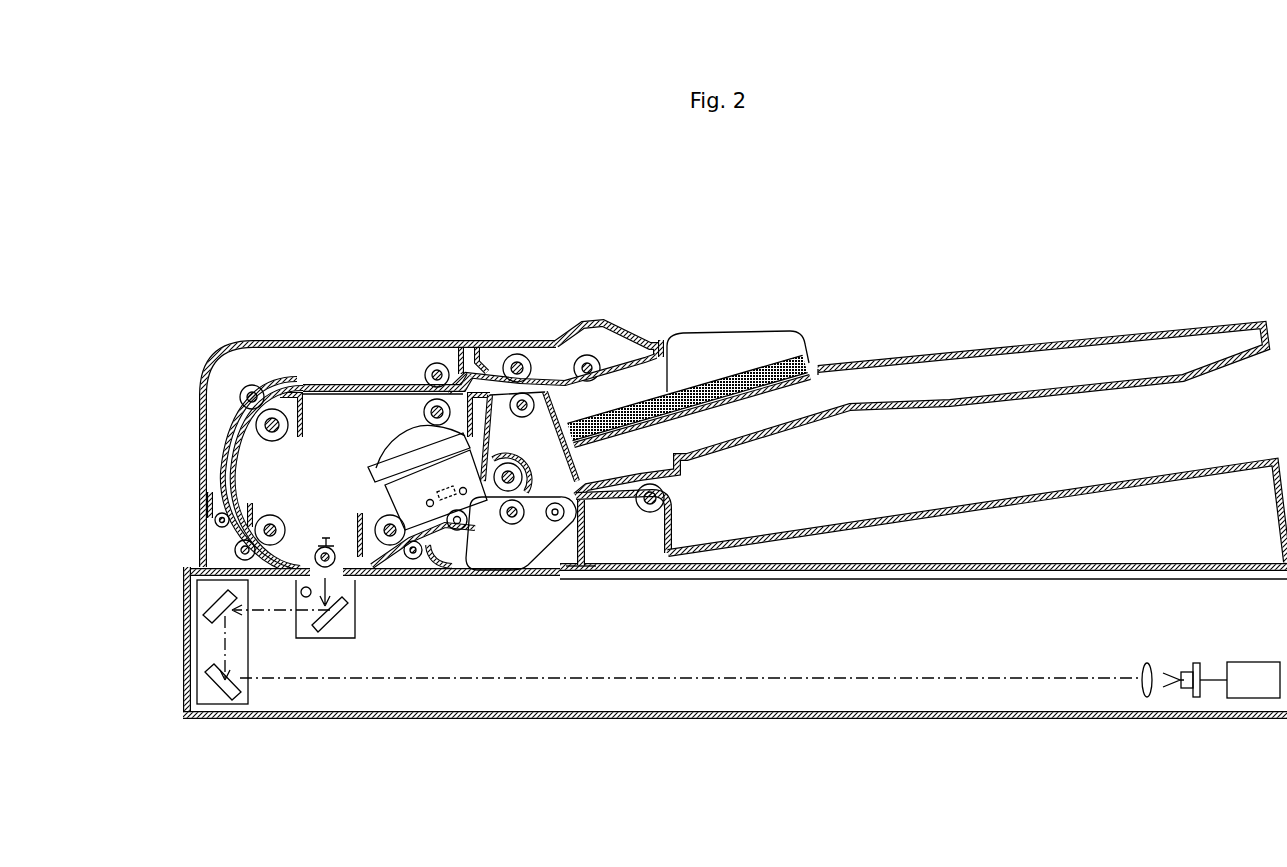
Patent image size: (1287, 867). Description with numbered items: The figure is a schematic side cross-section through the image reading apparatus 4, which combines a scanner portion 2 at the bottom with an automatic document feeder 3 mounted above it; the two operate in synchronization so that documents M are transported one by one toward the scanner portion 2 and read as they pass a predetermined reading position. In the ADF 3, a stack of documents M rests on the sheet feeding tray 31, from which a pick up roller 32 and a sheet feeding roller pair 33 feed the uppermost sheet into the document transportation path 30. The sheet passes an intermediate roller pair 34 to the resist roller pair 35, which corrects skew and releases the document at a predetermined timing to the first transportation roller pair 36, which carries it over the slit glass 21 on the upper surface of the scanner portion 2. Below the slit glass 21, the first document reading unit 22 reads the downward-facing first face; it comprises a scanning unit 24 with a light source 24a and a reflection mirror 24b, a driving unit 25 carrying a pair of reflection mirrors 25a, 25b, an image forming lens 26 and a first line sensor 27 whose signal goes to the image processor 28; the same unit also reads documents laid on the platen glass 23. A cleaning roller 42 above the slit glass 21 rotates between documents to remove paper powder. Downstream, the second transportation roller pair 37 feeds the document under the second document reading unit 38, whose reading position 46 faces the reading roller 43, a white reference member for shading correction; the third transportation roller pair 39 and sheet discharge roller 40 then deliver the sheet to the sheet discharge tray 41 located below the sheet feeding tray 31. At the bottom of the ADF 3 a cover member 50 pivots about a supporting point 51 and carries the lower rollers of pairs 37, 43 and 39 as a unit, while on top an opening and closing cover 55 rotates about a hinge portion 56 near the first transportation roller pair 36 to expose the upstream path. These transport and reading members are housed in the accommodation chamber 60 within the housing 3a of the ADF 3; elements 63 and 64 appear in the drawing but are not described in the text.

The scanner portion 2 is at (170, 645).
The automatic document feeder 3 is at (185, 466).
The housing 3a is at (484, 338).
The image reading apparatus 4 is at (83, 425).
The slit glass 21 is at (334, 580).
The first document reading unit 22 is at (327, 675).
The platen glass 23 is at (810, 582).
The scanning unit 24 is at (356, 623).
The light source 24a is at (303, 598).
The reflection mirror 24b is at (336, 633).
The driving unit 25 is at (247, 695).
The reflection mirror 25a is at (215, 606).
The reflection mirror 25b is at (215, 682).
The image forming lens 26 is at (1141, 688).
The first line sensor 27 is at (1187, 690).
The image processor 28 is at (1252, 698).
The document transportation path 30 is at (367, 390).
The sheet feeding tray 31 is at (1077, 340).
The pick up roller 32 is at (599, 346).
The sheet feeding roller pair 33 is at (517, 354).
The intermediate roller pair 34 is at (432, 366).
The resist roller pair 35 is at (260, 385).
The first transportation roller pair 36 is at (277, 516).
The second transportation roller pair 37 is at (384, 515).
The second document reading unit 38 is at (384, 463).
The third transportation roller pair 39 is at (518, 473).
The sheet discharge roller 40 is at (650, 513).
The sheet discharge tray 41 is at (1006, 496).
The cleaning roller 42 is at (312, 550).
The reading roller 43 is at (458, 532).
The reading position 46 is at (503, 462).
The cover member 50 is at (537, 542).
The supporting point 51 is at (586, 556).
The opening and closing cover 55 is at (218, 368).
The hinge portion 56 is at (222, 528).
The accommodation chamber 60 is at (293, 462).
The guide plate 63 is at (392, 385).
The guide rib 64 is at (318, 390).
The document M is at (750, 362).